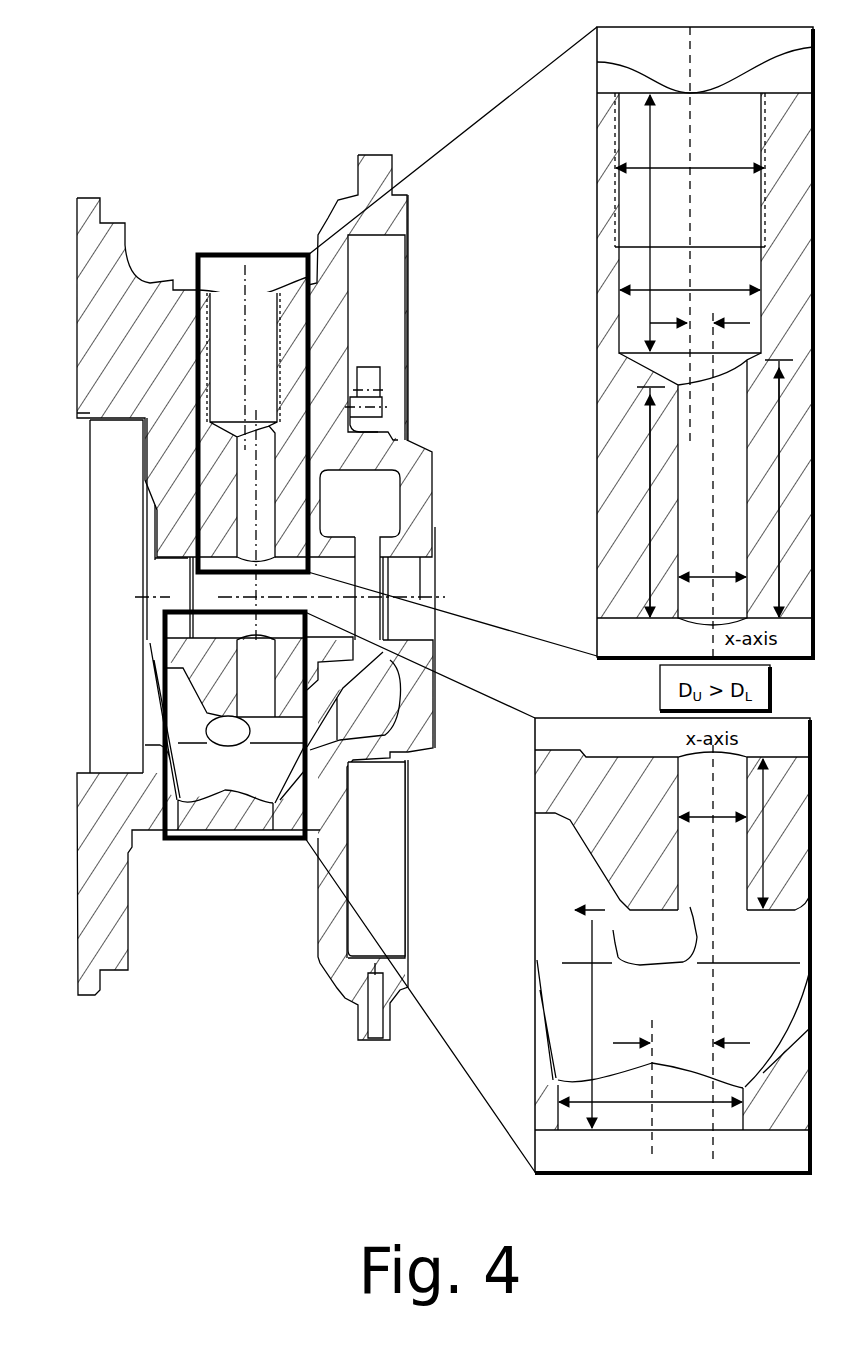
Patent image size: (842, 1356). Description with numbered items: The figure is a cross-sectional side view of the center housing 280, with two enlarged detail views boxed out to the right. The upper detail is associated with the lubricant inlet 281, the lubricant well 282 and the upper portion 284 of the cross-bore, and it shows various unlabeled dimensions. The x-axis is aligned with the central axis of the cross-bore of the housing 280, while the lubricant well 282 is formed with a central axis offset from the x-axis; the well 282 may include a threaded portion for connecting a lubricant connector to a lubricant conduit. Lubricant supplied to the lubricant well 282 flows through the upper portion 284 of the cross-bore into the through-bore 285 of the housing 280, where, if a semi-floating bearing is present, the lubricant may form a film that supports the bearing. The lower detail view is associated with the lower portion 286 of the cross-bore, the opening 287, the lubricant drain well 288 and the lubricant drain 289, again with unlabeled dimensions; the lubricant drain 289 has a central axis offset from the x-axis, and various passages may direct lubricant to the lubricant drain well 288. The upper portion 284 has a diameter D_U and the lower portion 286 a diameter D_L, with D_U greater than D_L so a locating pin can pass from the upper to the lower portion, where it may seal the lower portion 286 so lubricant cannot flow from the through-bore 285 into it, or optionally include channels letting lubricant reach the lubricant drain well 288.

The housing 280 is at (137, 168).
The lubricant inlet 281 is at (673, 70).
The lubricant well 282 is at (690, 223).
The upper portion of the cross-bore 284 is at (706, 489).
The through-bore 285 is at (290, 597).
The lower portion of the cross-bore 286 is at (720, 833).
The opening 287 is at (676, 911).
The lubricant drain well 288 is at (673, 1019).
The lubricant drain 289 is at (628, 1140).